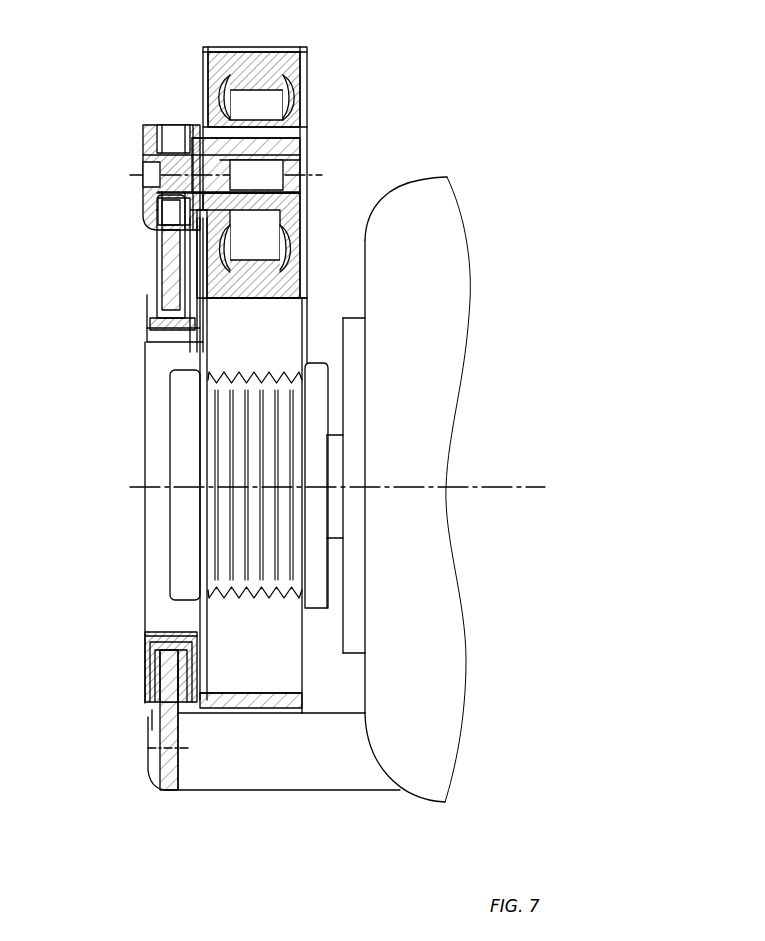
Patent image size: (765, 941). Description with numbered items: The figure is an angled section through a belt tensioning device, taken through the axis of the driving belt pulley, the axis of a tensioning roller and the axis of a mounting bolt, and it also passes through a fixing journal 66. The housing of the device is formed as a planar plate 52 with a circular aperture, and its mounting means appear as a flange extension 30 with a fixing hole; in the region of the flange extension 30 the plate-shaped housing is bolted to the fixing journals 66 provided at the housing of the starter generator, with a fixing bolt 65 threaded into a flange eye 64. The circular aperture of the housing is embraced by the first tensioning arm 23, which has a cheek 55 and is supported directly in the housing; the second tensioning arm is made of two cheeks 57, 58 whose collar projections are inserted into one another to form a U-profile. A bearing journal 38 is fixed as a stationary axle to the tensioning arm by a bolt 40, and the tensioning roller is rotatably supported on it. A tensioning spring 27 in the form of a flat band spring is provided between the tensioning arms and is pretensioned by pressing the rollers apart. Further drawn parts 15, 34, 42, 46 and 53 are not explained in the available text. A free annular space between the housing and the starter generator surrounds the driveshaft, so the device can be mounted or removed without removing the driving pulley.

The bearing 15 is at (200, 66).
The first tensioning arm 23 is at (108, 148).
The tensioning spring 27 is at (237, 713).
The flange extension 30 is at (170, 783).
The cover 34 is at (432, 170).
The bearing journal 38 is at (270, 152).
The bolt 40 is at (150, 148).
The pulley 42 is at (200, 447).
The hub 46 is at (330, 437).
The planar plate 52 is at (160, 265).
The seal 53 is at (152, 647).
The cheek 55 is at (162, 283).
The cheek 57 is at (150, 670).
The cheek 58 is at (162, 308).
The flange eye 64 is at (147, 328).
The fixing bolt 65 is at (152, 763).
The fixing journal 66 is at (258, 772).